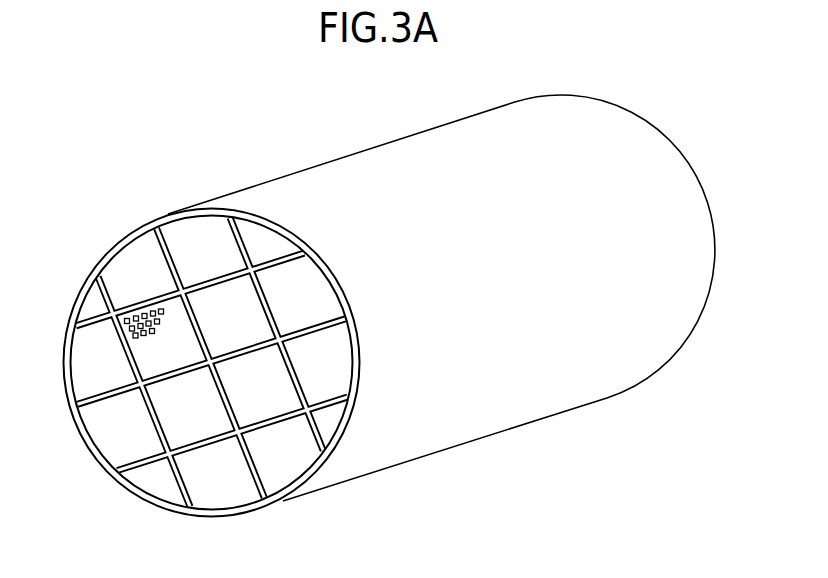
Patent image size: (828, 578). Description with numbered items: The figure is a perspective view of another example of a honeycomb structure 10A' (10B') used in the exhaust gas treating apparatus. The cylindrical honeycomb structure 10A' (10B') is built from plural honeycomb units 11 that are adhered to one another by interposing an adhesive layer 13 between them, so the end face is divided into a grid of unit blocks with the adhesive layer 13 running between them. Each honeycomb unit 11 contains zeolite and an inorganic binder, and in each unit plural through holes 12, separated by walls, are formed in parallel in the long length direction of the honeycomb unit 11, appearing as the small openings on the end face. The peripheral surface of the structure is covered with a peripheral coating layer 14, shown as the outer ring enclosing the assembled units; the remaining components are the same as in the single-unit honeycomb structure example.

The honeycomb structure 10A' is at (441, 288).
The honeycomb structure 10B' is at (441, 298).
The honeycomb unit 11 is at (207, 393).
The through hole 12 is at (150, 338).
The adhesive layer 13 is at (318, 435).
The peripheral coating layer 14 is at (122, 240).